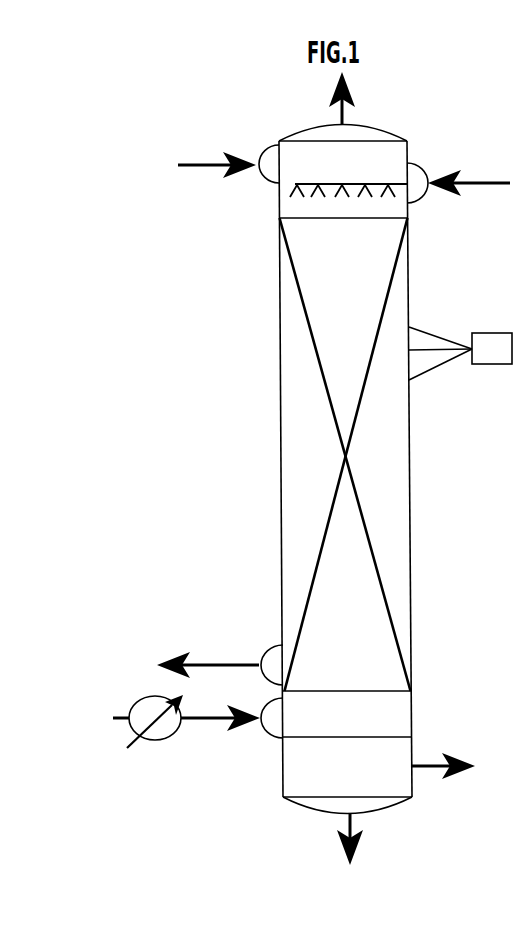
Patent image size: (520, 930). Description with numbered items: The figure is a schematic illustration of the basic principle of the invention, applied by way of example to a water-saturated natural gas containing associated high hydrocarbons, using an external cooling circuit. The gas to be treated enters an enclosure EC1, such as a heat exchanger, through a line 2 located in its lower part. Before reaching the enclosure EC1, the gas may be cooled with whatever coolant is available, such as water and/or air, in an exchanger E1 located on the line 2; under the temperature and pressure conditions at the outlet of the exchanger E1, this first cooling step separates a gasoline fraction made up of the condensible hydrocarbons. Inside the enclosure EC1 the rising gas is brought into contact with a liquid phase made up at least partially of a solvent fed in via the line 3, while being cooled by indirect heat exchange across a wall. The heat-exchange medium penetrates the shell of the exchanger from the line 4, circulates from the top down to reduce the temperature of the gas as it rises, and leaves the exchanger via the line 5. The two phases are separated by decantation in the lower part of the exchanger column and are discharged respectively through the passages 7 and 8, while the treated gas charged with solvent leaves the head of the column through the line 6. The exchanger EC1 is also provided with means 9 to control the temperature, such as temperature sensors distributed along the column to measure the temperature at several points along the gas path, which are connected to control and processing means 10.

The enclosure (heat exchanger) EC1 is at (384, 469).
The line 2 is at (198, 727).
The line 3 is at (458, 187).
The line 4 is at (228, 159).
The line 5 is at (220, 659).
The line 6 is at (349, 98).
The passage 7 is at (359, 840).
The passage 8 is at (451, 774).
The means to control the temperature 9 is at (440, 340).
The control and processing means 10 is at (492, 360).
The exchanger E1 is at (155, 737).